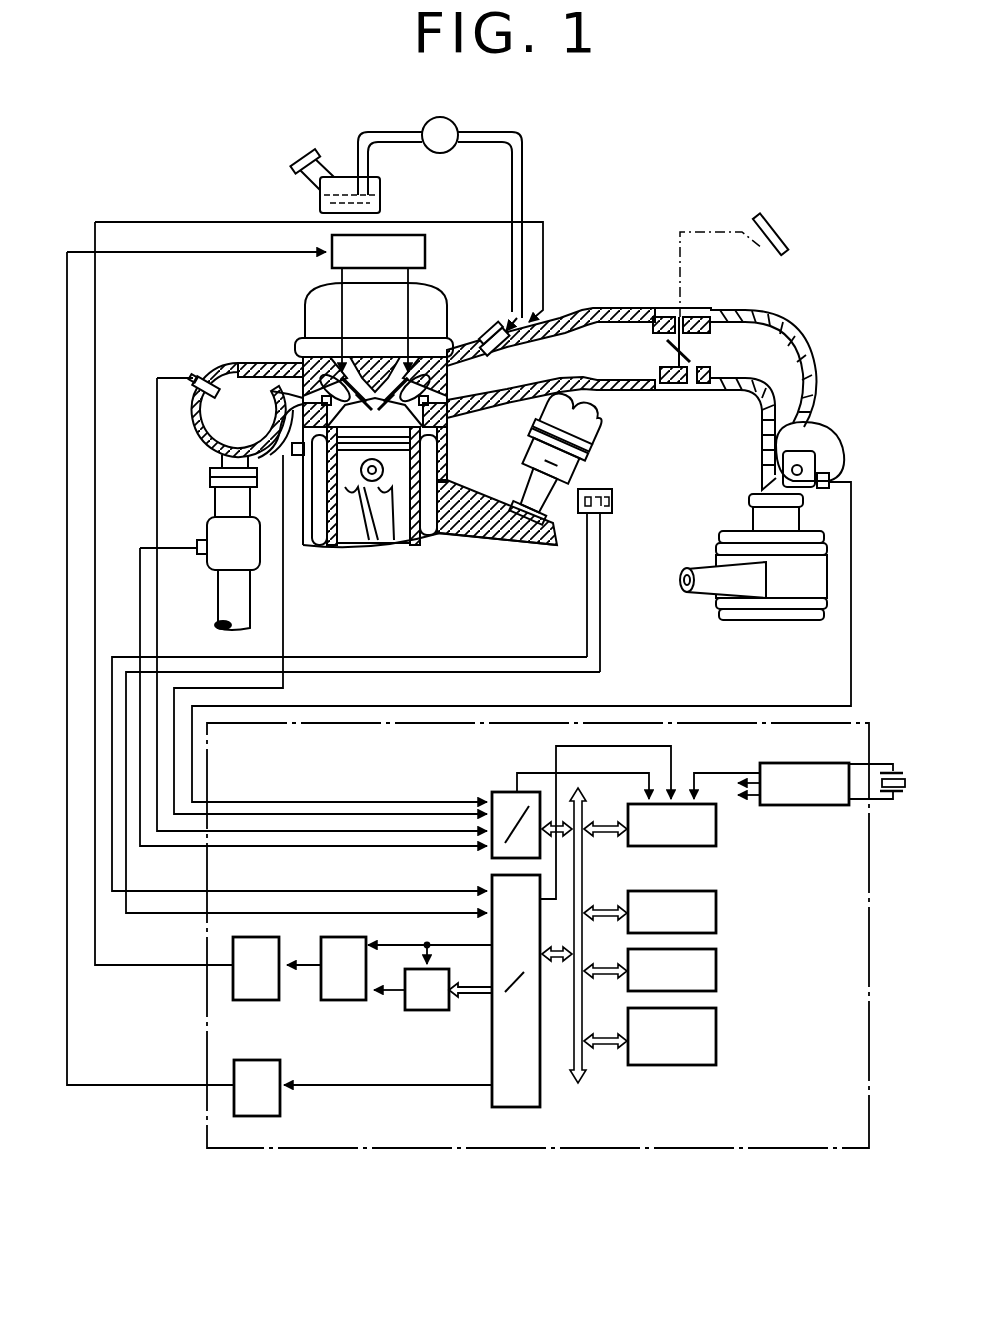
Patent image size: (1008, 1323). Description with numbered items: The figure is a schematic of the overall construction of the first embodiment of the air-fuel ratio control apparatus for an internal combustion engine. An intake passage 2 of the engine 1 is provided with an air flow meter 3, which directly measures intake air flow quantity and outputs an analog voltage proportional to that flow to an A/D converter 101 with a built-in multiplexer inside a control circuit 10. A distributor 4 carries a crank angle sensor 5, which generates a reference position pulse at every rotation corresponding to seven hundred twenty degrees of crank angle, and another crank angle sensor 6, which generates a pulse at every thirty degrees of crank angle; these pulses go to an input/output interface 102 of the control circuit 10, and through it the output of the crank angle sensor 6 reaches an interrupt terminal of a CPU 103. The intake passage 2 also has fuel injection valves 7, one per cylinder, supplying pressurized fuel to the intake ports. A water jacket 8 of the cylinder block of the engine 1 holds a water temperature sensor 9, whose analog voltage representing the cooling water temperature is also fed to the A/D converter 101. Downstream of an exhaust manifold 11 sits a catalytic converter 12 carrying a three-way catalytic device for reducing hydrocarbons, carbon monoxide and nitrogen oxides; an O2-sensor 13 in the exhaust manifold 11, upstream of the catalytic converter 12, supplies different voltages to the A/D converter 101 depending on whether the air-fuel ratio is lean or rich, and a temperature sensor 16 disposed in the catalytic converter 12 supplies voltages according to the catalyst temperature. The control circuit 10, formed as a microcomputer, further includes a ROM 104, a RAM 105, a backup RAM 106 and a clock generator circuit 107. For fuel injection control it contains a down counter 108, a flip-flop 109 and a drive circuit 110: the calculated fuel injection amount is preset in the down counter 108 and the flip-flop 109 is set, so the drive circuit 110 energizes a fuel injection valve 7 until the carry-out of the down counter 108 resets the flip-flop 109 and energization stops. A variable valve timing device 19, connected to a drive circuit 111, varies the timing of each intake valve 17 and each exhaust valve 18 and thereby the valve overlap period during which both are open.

The engine 1 is at (427, 303).
The intake passage 2 is at (684, 318).
The air flow meter 3 is at (844, 448).
The distributor 4 is at (520, 452).
The crank angle sensor 5 is at (584, 514).
The crank angle sensor 6 is at (607, 514).
The fuel injection valve 7 is at (492, 330).
The water jacket 8 is at (302, 530).
The water temperature sensor 9 is at (294, 452).
The control circuit 10 is at (567, 935).
The exhaust manifold 11 is at (257, 366).
The catalytic converter 12 is at (207, 526).
The O2-sensor 13 is at (205, 380).
The temperature sensor 16 is at (200, 556).
The intake valve 17 is at (463, 410).
The exhaust valve 18 is at (288, 385).
The variable valve timing device 19 is at (425, 252).
The A/D converter 101 is at (492, 792).
The input/output interface 102 is at (540, 1098).
The CPU 103 is at (716, 828).
The ROM 104 is at (716, 911).
The RAM 105 is at (716, 969).
The backup RAM 106 is at (716, 1040).
The clock generator circuit 107 is at (789, 763).
The down counter 108 is at (427, 1010).
The flip-flop 109 is at (343, 1000).
The drive circuit 110 is at (256, 1000).
The drive circuit 111 is at (280, 1098).